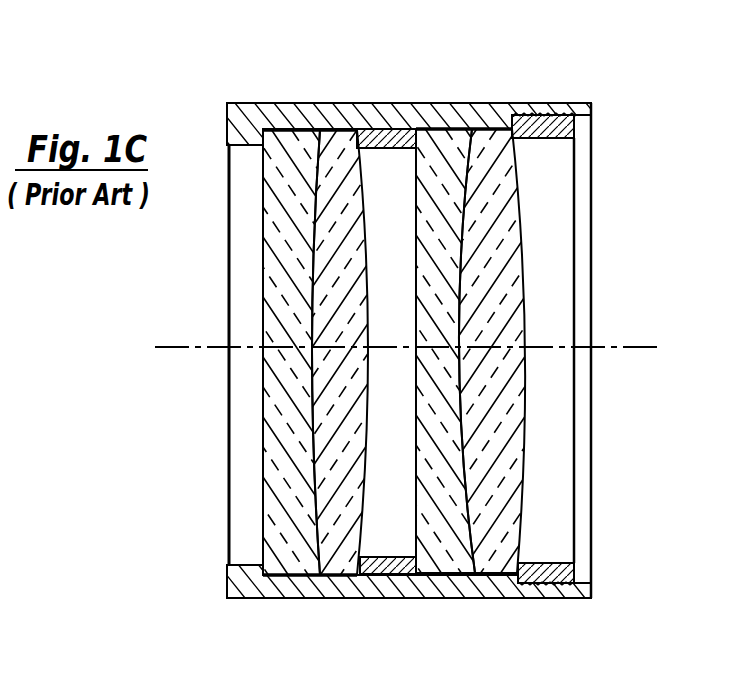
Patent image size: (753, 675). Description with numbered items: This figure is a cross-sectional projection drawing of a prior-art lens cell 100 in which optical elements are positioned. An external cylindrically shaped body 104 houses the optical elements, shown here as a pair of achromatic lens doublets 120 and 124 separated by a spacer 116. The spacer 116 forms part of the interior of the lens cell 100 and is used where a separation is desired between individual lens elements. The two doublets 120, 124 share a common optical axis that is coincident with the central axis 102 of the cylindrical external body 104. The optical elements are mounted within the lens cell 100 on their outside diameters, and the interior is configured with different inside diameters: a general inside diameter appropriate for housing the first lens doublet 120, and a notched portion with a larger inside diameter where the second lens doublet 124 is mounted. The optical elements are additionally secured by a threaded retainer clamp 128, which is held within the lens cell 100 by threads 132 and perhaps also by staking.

The lens cell 100 is at (430, 305).
The central axis 102 is at (637, 343).
The external cylindrically shaped body 104 is at (288, 102).
The spacer 116 is at (393, 133).
The first lens doublet 120 is at (303, 565).
The second lens doublet 124 is at (497, 550).
The threaded retainer clamp 128 is at (556, 570).
The threads 132 is at (563, 598).